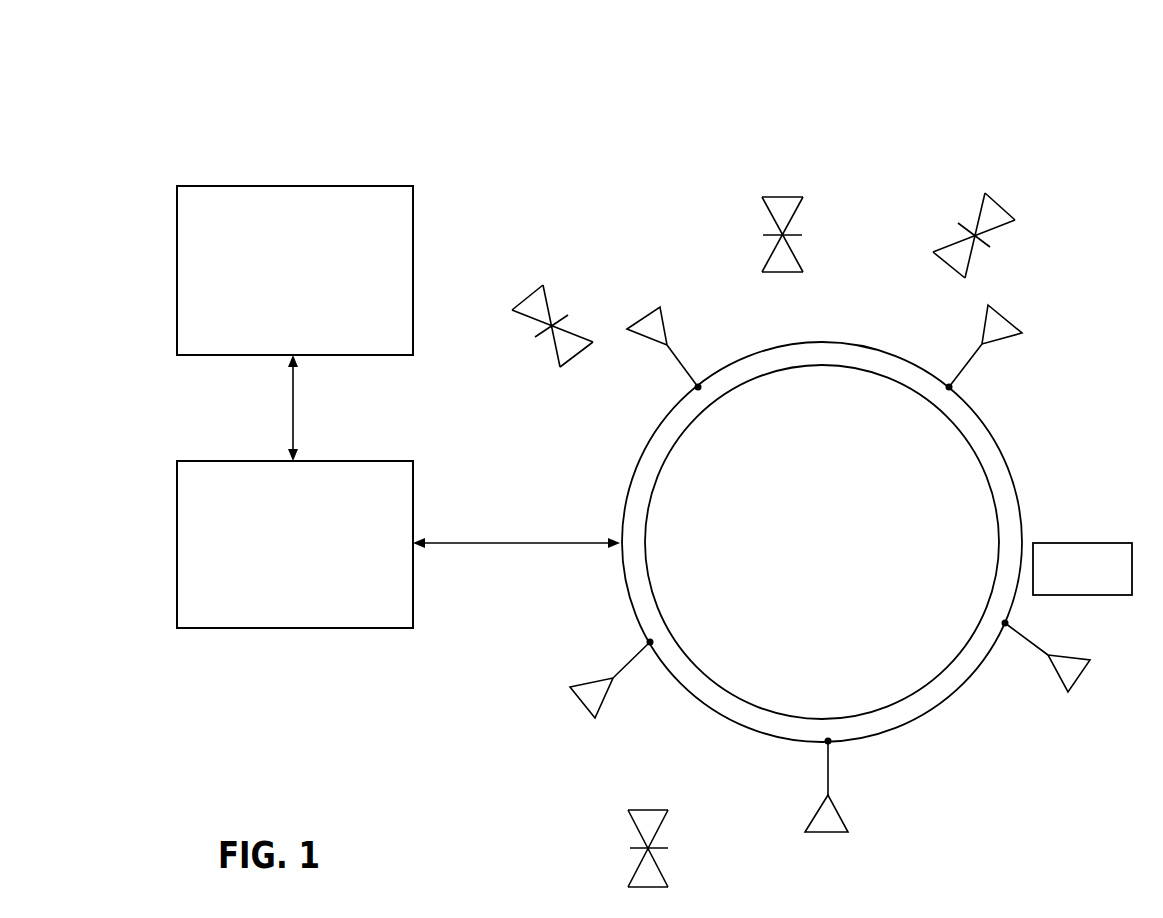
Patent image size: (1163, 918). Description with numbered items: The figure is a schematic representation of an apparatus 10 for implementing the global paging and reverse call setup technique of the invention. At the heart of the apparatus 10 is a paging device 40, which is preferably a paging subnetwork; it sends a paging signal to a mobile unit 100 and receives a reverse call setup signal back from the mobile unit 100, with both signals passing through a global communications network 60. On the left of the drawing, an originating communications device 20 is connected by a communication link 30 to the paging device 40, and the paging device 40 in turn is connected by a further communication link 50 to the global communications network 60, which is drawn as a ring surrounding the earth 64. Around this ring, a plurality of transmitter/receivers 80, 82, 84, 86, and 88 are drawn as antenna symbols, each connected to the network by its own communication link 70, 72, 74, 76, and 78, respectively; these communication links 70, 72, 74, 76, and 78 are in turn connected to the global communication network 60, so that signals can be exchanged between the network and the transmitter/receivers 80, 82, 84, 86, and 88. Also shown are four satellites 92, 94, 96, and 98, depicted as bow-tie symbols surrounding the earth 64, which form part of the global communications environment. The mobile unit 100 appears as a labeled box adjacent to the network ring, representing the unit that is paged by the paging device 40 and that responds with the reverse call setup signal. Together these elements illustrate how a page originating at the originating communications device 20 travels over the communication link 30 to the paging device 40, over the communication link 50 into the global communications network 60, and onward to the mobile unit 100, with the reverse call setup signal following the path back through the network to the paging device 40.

The apparatus 10 is at (436, 80).
The originating communications device 20 is at (177, 280).
The communication link 30 is at (293, 406).
The paging device 40 is at (177, 536).
The communication link 50 is at (503, 543).
The global communications network 60 is at (640, 462).
The earth 64 is at (835, 560).
The communication link 70 is at (628, 665).
The communication link 72 is at (683, 370).
The communication link 74 is at (962, 370).
The communication link 76 is at (1040, 648).
The communication link 78 is at (830, 773).
The transmitter/receiver 80 is at (575, 683).
The transmitter/receiver 82 is at (650, 308).
The transmitter/receiver 84 is at (1012, 322).
The transmitter/receiver 86 is at (1064, 688).
The transmitter/receiver 88 is at (812, 815).
The satellite 92 is at (778, 196).
The satellite 94 is at (985, 193).
The satellite 96 is at (642, 810).
The satellite 98 is at (530, 298).
The mobile unit 100 is at (1052, 543).